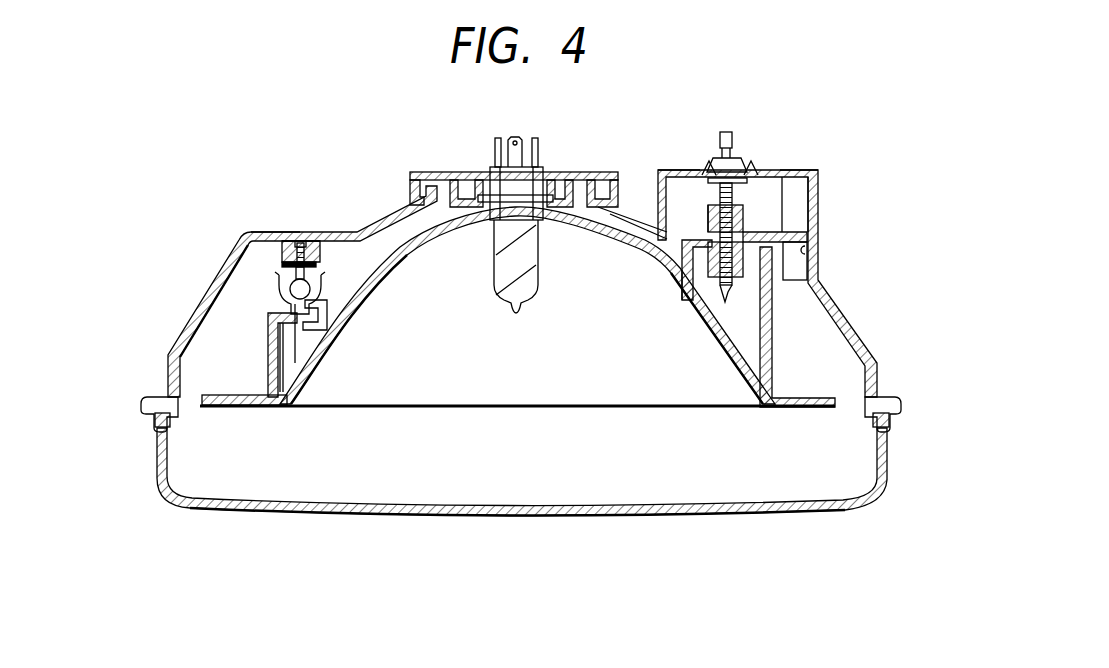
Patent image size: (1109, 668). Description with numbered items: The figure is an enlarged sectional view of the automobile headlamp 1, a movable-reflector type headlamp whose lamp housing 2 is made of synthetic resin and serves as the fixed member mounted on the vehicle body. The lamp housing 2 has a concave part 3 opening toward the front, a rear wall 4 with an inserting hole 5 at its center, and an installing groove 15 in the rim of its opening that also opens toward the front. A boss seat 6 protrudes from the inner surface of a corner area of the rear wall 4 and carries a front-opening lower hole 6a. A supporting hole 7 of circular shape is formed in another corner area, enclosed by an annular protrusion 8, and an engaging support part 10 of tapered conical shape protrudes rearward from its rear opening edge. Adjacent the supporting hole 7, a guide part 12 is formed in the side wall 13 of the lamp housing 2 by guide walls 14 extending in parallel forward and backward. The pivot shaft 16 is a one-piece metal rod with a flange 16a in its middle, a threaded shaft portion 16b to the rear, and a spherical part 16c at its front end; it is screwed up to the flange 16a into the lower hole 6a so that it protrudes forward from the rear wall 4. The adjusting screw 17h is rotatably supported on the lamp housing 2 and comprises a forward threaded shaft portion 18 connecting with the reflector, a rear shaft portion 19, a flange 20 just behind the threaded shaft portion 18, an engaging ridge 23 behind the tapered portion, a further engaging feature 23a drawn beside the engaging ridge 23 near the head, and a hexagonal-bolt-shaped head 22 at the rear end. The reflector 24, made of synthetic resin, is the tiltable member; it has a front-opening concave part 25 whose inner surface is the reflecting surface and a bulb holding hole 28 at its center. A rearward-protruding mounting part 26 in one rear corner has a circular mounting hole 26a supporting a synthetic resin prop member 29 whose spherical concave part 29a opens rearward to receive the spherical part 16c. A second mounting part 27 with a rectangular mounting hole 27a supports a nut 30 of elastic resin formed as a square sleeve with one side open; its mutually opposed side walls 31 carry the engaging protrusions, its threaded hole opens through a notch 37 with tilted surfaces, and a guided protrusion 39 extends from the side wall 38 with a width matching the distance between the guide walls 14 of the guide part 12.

The automobile headlamp 1 is at (242, 524).
The lamp housing 2 is at (170, 353).
The concave part 3 is at (178, 430).
The rear wall 4 is at (398, 225).
The inserting hole 5 is at (429, 172).
The boss seat 6 is at (328, 241).
The lower hole 6a is at (293, 241).
The supporting hole 7 is at (770, 172).
The annular protrusion 8 is at (800, 176).
The engaging support part 10 is at (703, 172).
The guide part 12 is at (795, 208).
The side wall 13 is at (802, 250).
The guide wall 14 is at (800, 217).
The installing groove 15 is at (143, 413).
The pivot shaft 16 is at (280, 260).
The flange 16a is at (245, 238).
The threaded shaft portion 16b is at (300, 241).
The spherical part 16c is at (327, 306).
The adjusting screw 17h is at (718, 278).
The threaded shaft portion 18 is at (730, 292).
The shaft portion 19 is at (655, 176).
The flange 20 is at (678, 170).
The head 22 is at (722, 130).
The engaging ridge 23 is at (740, 162).
The lug 23a is at (730, 158).
The reflector 24 is at (268, 375).
The concave part 25 is at (310, 385).
The mounting part 26 is at (267, 355).
The mounting hole 26a is at (320, 345).
The mounting part 27 is at (773, 341).
The mounting hole 27a is at (708, 247).
The bulb holding hole 28 is at (533, 222).
The prop member 29 is at (288, 292).
The concave part 29a is at (325, 277).
The nut 30 is at (742, 222).
The side wall 31 is at (695, 290).
The notch 37 is at (705, 222).
The side wall 38 is at (797, 208).
The guided protrusion 39 is at (812, 236).